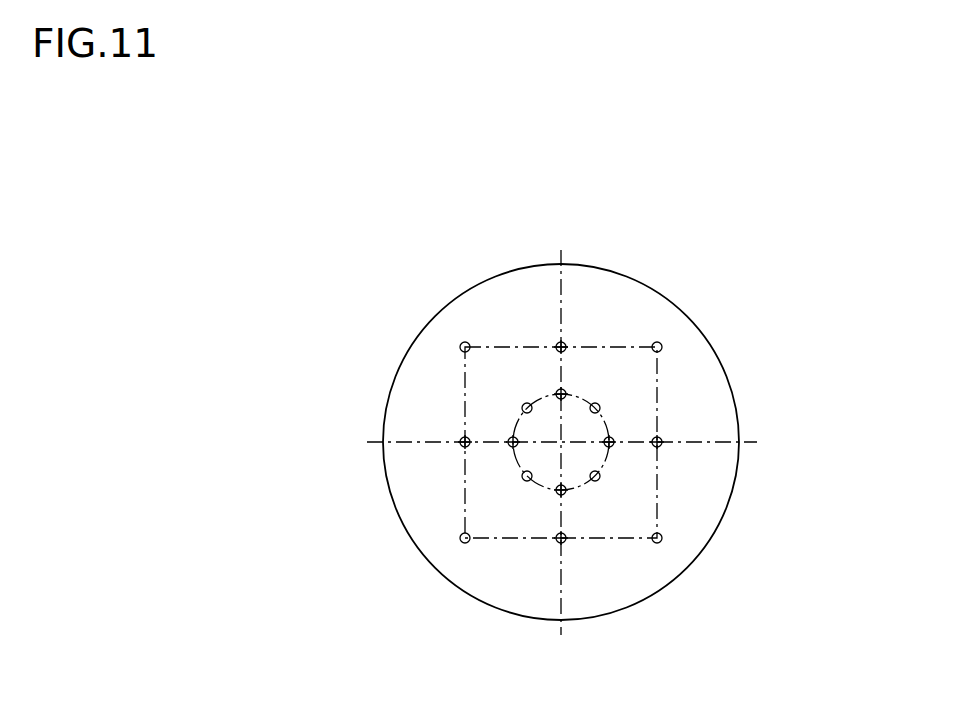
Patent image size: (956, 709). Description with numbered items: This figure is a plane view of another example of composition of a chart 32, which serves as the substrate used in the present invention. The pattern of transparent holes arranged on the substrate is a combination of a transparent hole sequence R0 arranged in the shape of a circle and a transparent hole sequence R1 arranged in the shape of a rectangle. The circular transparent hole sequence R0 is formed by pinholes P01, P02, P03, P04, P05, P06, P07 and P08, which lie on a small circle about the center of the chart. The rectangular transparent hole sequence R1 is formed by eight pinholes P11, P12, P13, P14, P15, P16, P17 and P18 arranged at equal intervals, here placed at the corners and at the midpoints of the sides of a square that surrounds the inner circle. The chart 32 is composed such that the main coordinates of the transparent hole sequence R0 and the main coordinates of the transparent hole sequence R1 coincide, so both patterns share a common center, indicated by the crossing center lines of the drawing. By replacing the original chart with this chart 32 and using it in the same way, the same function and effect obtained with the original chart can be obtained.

The chart 32 is at (530, 288).
The transparent hole sequence R0 is at (583, 400).
The transparent hole sequence R1 is at (657, 507).
The pinhole P01 is at (561, 394).
The pinhole P02 is at (591, 410).
The pinhole P03 is at (609, 442).
The pinhole P04 is at (591, 472).
The pinhole P05 is at (561, 490).
The pinhole P06 is at (531, 474).
The pinhole P07 is at (513, 442).
The pinhole P08 is at (529, 412).
The pinhole P11 is at (561, 347).
The pinhole P12 is at (657, 347).
The pinhole P13 is at (657, 442).
The pinhole P14 is at (657, 538).
The pinhole P15 is at (561, 538).
The pinhole P16 is at (465, 538).
The pinhole P17 is at (465, 442).
The pinhole P18 is at (465, 347).